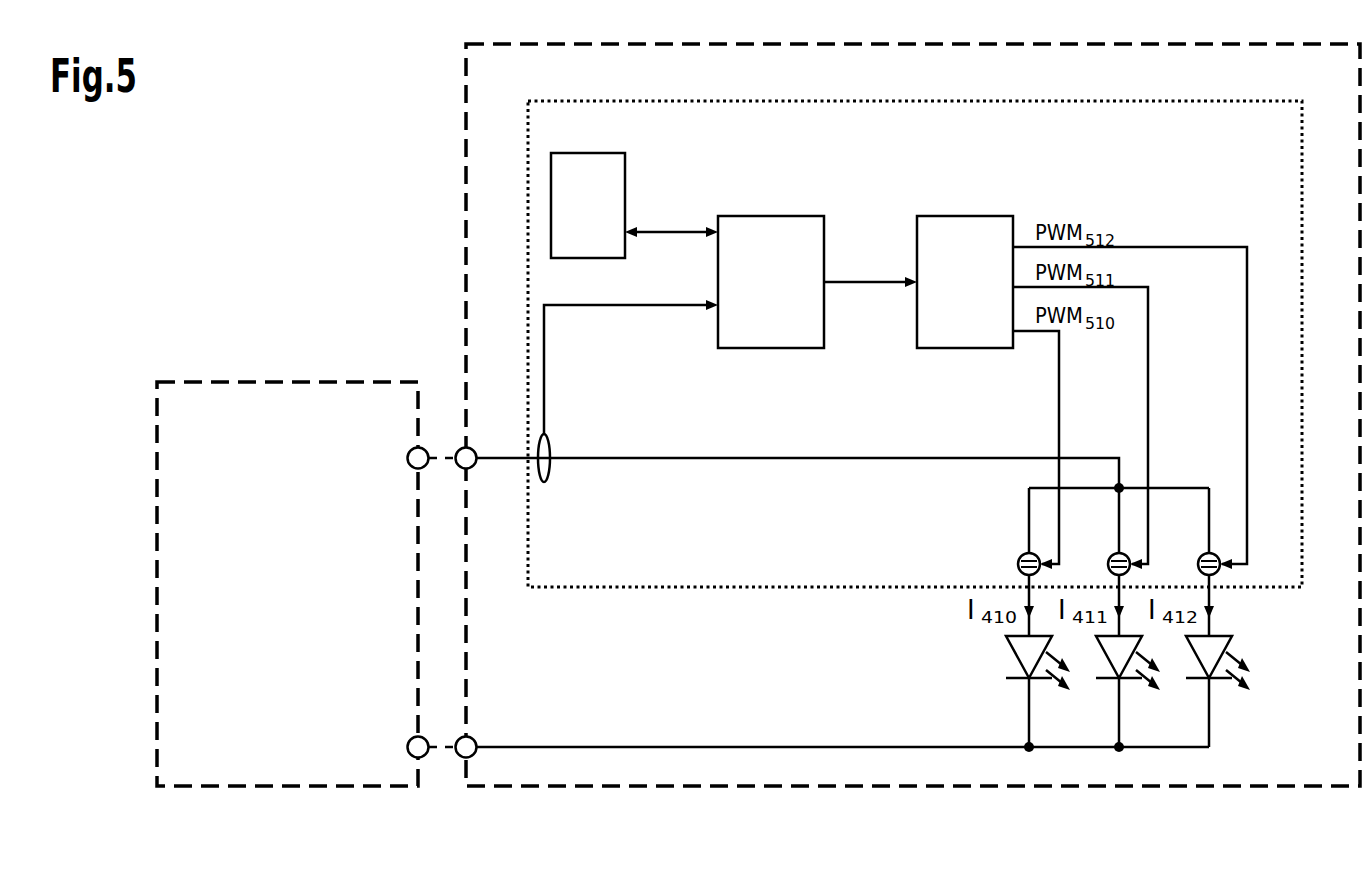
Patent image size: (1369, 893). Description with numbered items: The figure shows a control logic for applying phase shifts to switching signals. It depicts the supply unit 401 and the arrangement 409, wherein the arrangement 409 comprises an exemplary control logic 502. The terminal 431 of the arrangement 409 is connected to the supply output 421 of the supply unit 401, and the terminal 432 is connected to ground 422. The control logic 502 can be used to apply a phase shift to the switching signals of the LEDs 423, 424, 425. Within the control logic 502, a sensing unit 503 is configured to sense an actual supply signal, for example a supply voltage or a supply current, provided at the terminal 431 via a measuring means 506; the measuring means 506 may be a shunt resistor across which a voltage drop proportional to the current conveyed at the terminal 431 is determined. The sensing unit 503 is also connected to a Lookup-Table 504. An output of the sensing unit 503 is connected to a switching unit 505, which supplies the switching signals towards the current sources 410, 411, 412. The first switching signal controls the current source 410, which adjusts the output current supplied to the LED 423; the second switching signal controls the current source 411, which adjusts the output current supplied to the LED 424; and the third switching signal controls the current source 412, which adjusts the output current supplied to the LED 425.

The supply unit 401 is at (252, 382).
The arrangement 409 is at (466, 103).
The control logic 502 is at (528, 125).
The sensing unit 503 is at (760, 216).
The Lookup-Table (LUT) 504 is at (625, 198).
The switching unit 505 is at (998, 216).
The measuring means 506 is at (550, 452).
The supply output 421 is at (411, 444).
The ground 422 is at (413, 732).
The terminal 431 is at (788, 453).
The terminal 432 is at (833, 732).
The current source 410 is at (1006, 562).
The current source 411 is at (1099, 562).
The current source 412 is at (1189, 562).
The LED 423 is at (1042, 691).
The LED 424 is at (1133, 691).
The LED 425 is at (1223, 691).